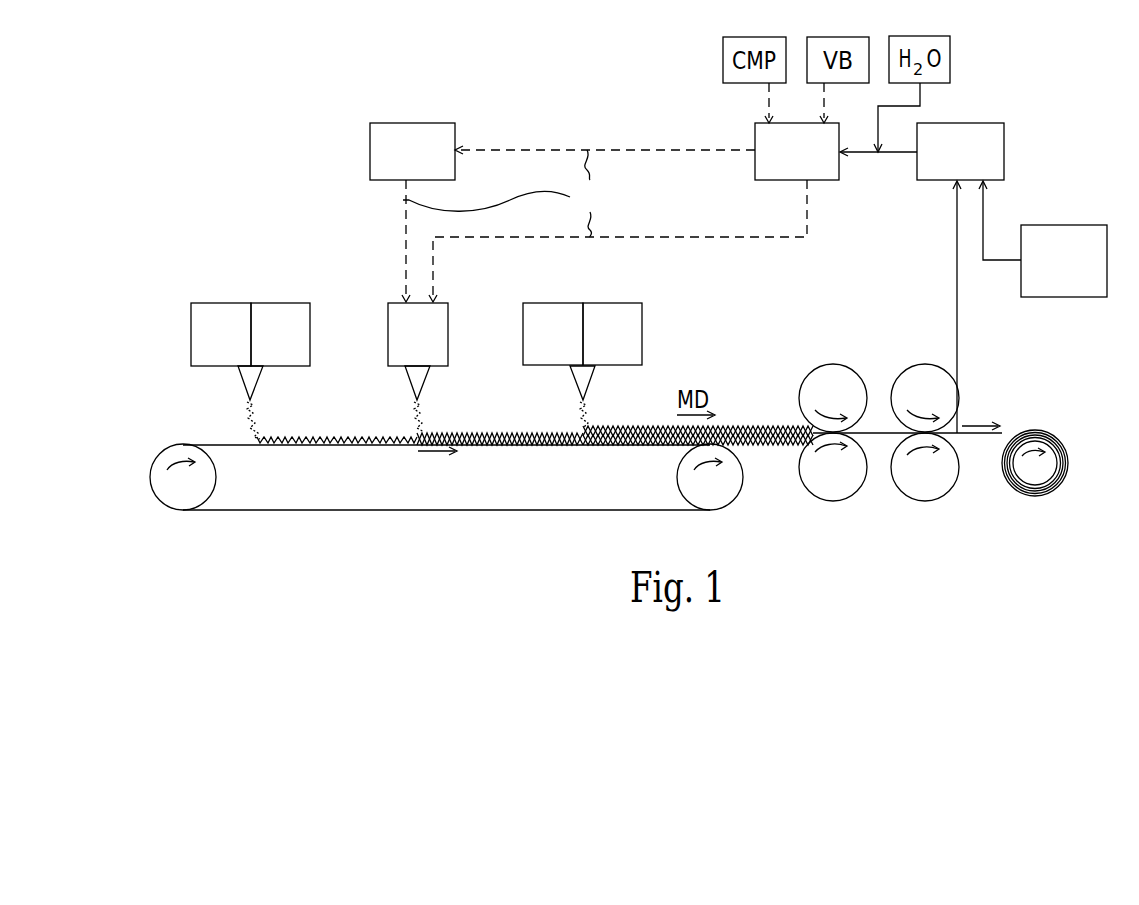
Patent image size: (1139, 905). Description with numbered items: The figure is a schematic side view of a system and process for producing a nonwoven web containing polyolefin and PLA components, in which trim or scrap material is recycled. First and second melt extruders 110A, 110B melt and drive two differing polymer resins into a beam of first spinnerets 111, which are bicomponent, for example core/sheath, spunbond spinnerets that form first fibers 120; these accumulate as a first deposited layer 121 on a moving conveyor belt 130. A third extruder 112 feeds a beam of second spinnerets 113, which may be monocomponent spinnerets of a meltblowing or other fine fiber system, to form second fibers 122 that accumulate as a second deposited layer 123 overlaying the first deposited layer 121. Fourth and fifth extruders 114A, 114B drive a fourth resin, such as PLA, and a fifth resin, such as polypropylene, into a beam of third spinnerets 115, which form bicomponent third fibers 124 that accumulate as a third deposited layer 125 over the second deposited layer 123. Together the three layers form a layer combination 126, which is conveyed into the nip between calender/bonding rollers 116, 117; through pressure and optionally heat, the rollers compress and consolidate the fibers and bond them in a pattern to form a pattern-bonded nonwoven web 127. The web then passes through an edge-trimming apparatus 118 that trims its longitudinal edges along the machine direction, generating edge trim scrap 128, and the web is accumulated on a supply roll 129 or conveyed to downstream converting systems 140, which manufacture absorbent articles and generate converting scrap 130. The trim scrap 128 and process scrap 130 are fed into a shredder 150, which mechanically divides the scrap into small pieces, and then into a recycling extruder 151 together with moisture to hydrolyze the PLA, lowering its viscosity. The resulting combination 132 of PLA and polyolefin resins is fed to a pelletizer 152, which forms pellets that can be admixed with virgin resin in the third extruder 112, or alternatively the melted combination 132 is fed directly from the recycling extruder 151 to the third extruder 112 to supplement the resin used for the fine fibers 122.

The first melt extruder 110A is at (246, 345).
The second melt extruder 110B is at (256, 345).
The first spinnerets 111 is at (240, 377).
The third extruder 112 is at (401, 345).
The second spinnerets 113 is at (407, 377).
The fourth extruder 114A is at (578, 345).
The fifth extruder 114B is at (588, 345).
The third spinnerets 115 is at (570, 378).
The calender/bonding roller 116 is at (816, 403).
The calender/bonding roller 117 is at (816, 483).
The edge-trimming apparatus 118 is at (894, 494).
The first fibers 120 is at (248, 424).
The first deposited layer 121 is at (317, 435).
The second fibers 122 is at (415, 428).
The second deposited layer 123 is at (481, 433).
The third fibers 124 is at (584, 424).
The third deposited layer 125 is at (632, 427).
The layer combination 126 is at (767, 426).
The pattern-bonded nonwoven web 127 is at (877, 433).
The edge trim scrap 128 is at (957, 348).
The supply roll 129 is at (1033, 497).
The conveyor belt / converting scrap 130 is at (285, 510).
The combination of PLA and polyolefin resins 132 is at (504, 193).
The downstream converting systems 140 is at (1047, 272).
The shredder 150 is at (943, 161).
The recycling extruder 151 is at (780, 161).
The pelletizer 152 is at (395, 161).